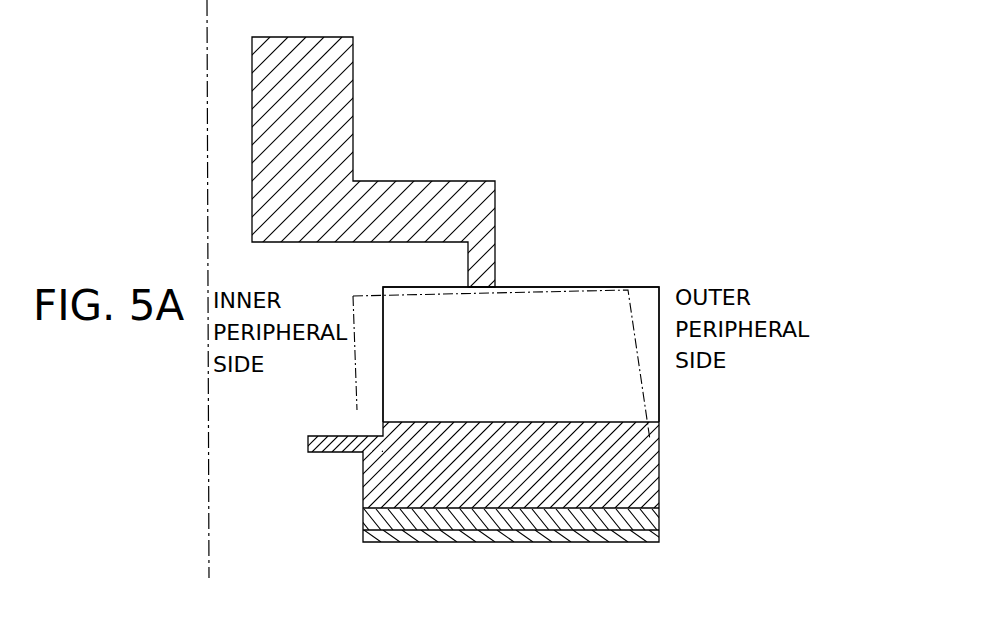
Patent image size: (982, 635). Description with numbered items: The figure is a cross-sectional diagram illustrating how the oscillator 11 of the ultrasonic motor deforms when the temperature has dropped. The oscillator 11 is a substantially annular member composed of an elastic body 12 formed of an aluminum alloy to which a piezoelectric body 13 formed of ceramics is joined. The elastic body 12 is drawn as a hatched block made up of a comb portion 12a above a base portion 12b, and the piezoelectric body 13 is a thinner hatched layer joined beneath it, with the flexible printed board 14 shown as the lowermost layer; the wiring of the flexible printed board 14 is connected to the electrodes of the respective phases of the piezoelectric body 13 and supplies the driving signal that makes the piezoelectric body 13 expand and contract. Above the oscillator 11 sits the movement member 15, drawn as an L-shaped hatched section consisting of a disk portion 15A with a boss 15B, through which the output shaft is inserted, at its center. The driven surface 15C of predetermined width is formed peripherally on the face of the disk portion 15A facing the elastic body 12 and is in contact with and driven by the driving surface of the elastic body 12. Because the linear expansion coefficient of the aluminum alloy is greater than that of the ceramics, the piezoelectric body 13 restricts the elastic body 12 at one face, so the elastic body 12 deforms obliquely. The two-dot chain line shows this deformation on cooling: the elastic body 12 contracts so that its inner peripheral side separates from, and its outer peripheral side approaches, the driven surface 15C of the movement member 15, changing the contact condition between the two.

The oscillator 11 is at (799, 416).
The elastic body 12 is at (752, 385).
The comb portion 12a is at (630, 403).
The base portion 12b is at (635, 468).
The piezoelectric body 13 is at (632, 517).
The flexible printed board 14 is at (620, 535).
The movement member 15 is at (490, 43).
The disk portion 15A is at (435, 178).
The boss 15B is at (340, 82).
The driven surface 15C is at (483, 290).